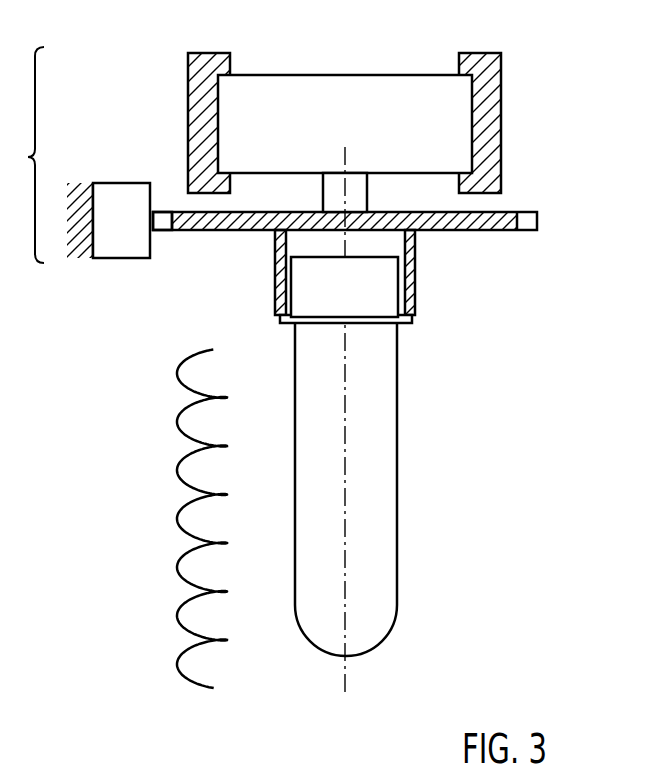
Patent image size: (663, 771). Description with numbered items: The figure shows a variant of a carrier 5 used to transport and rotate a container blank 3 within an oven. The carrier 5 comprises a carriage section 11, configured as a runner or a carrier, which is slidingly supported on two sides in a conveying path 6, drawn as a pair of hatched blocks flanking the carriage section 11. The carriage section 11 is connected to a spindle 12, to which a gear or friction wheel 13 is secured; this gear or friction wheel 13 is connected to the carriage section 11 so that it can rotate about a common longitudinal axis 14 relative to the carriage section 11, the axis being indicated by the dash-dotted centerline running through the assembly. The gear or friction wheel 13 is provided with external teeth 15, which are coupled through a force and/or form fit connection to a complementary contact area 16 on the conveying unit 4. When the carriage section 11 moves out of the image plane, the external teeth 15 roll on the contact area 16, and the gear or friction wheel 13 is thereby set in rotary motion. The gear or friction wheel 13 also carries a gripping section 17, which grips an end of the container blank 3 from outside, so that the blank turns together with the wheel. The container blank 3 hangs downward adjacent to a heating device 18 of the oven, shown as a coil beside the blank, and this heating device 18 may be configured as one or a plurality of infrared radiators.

The container blank 3 is at (397, 400).
The conveying unit 4 is at (84, 192).
The carrier 5 is at (26, 155).
The conveying path 6 is at (210, 62).
The carriage section 11 is at (458, 110).
The spindle 12 is at (360, 188).
The gear or friction wheel 13 is at (538, 221).
The common longitudinal axis 14 is at (346, 148).
The external teeth 15 is at (166, 214).
The contact area 16 is at (117, 194).
The gripping section 17 is at (414, 290).
The heating device 18 is at (205, 503).